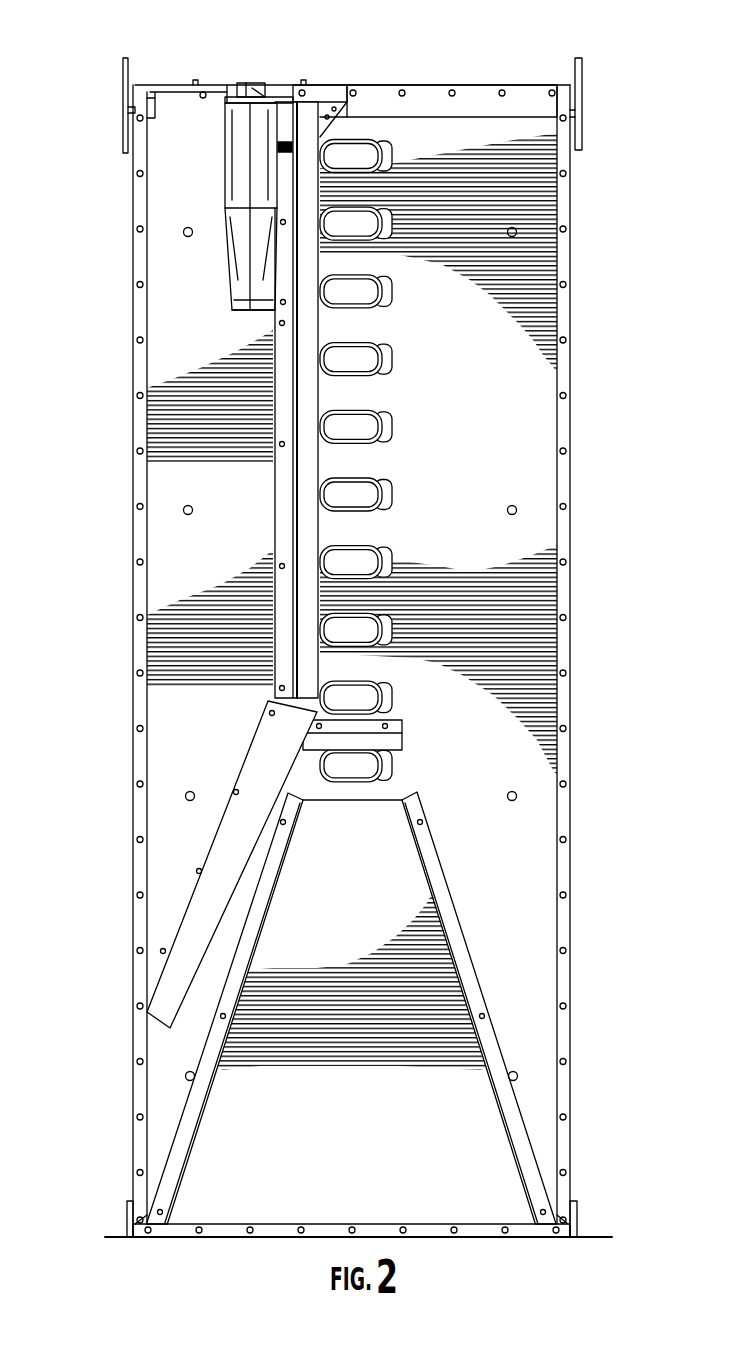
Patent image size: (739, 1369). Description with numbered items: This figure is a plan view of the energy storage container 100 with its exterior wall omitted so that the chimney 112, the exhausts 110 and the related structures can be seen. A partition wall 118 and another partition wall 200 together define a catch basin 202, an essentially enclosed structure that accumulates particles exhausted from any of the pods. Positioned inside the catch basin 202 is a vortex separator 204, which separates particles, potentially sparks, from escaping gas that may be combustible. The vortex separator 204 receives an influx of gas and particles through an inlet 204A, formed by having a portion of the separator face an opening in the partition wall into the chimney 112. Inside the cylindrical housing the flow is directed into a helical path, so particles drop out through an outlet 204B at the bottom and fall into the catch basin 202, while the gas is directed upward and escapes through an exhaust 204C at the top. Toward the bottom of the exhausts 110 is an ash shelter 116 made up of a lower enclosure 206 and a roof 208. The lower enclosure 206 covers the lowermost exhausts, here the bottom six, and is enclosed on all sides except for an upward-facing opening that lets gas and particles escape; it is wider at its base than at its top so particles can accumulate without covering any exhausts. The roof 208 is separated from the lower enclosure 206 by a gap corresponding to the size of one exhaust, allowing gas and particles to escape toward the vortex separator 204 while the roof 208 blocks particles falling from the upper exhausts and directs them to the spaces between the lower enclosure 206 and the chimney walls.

The energy storage container 100 is at (68, 930).
The exhausts 110 is at (388, 280).
The chimney 112 is at (535, 403).
The ash shelter 116 is at (486, 890).
The partition wall 118 is at (392, 462).
The partition wall 200 is at (228, 902).
The catch basin 202 is at (188, 443).
The vortex separator 204 is at (225, 180).
The inlet 204A is at (338, 112).
The outlet 204B is at (249, 318).
The exhaust 204C is at (247, 78).
The lower enclosure 206 is at (475, 968).
The roof 208 is at (402, 723).